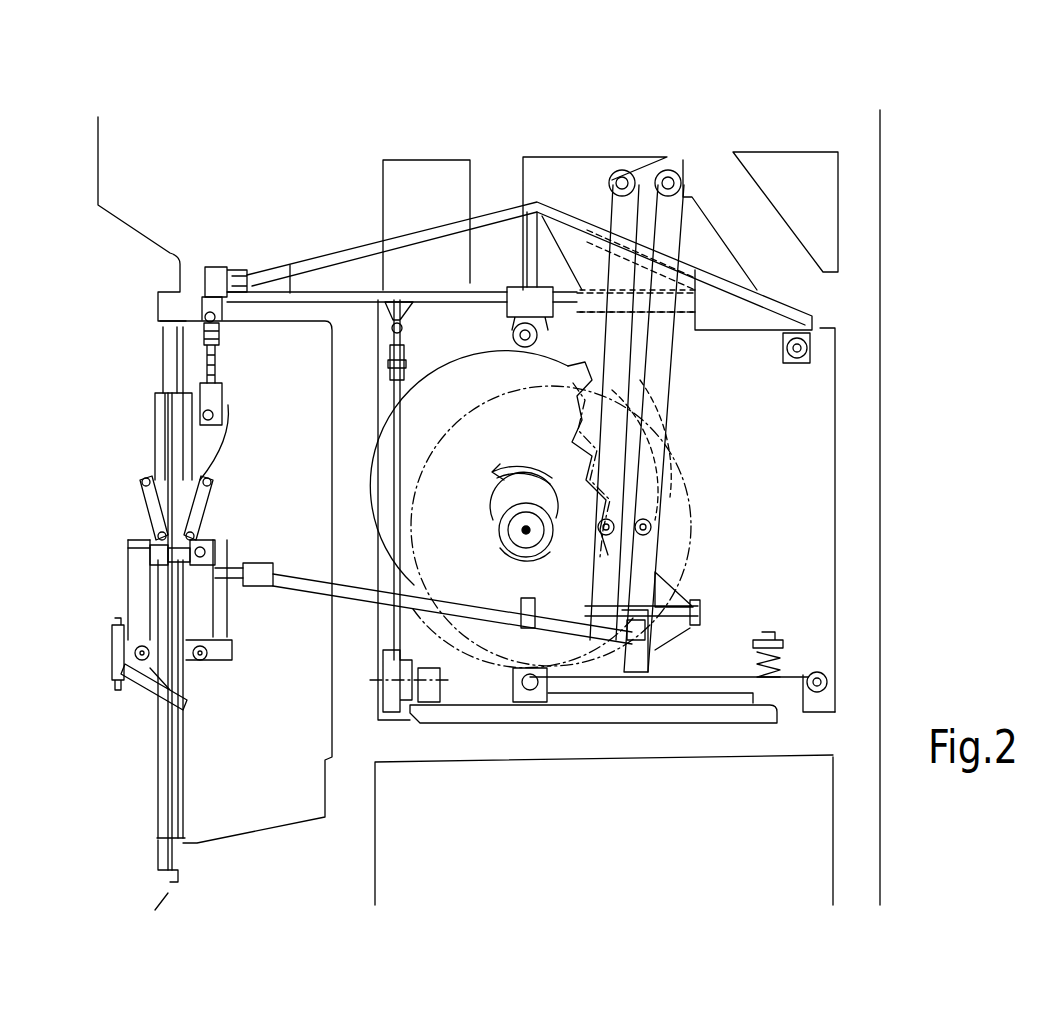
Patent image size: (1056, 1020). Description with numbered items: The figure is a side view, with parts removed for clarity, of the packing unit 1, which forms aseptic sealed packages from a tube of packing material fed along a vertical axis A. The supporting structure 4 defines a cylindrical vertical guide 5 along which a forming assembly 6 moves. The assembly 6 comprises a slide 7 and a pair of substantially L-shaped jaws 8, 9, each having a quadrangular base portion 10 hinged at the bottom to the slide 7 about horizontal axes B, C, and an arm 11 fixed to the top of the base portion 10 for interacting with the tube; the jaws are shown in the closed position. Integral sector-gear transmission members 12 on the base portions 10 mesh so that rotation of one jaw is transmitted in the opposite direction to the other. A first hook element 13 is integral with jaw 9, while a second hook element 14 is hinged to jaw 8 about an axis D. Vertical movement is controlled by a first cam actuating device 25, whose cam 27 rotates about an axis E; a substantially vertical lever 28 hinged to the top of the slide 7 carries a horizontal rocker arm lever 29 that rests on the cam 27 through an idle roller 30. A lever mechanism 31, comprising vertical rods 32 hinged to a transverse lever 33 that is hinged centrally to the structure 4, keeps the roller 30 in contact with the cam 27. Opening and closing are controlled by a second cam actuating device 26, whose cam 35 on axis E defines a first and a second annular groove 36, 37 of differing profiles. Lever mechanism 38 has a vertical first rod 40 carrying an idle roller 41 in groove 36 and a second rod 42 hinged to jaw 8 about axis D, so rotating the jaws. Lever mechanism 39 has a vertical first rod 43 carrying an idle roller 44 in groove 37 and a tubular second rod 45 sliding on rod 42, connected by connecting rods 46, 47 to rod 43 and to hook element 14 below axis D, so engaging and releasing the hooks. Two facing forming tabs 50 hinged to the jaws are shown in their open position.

The packing unit 1 is at (813, 438).
The supporting structure 4 is at (855, 137).
The cylindrical vertical guide 5 is at (162, 365).
The forming assembly 6 is at (104, 656).
The slide 7 is at (165, 438).
The jaw 8 is at (232, 647).
The jaw 9 is at (119, 605).
The base portion 10 is at (140, 588).
The arm 11 is at (217, 528).
The transmission member 12 is at (158, 703).
The first hook element 13 is at (148, 577).
The second hook element 14 is at (200, 520).
The first cam actuating device 25 is at (338, 240).
The second cam actuating device 26 is at (690, 398).
The cam 27 is at (460, 397).
The lever 28 is at (223, 340).
The rocker arm lever 29 is at (393, 245).
The idle roller 30 is at (500, 312).
The lever mechanism 31 is at (392, 620).
The rod 32 is at (410, 620).
The transverse lever 33 is at (393, 705).
The cam 35 is at (507, 647).
The first annular groove 36 is at (662, 450).
The second annular groove 37 is at (662, 478).
The lever mechanism 38 is at (681, 423).
The lever mechanism 39 is at (593, 343).
The first rod 40 is at (657, 346).
The idle roller 41 is at (655, 524).
The second rod 42 is at (562, 630).
The first rod 43 is at (620, 218).
The idle roller 44 is at (623, 543).
The tubular second rod 45 is at (340, 612).
The connecting rod 46 is at (552, 600).
The connecting rod 47 is at (237, 583).
The forming tab 50 is at (212, 498).
The axis A is at (170, 935).
The axis B is at (205, 668).
The axis C is at (140, 687).
The axis D is at (225, 550).
The axis E is at (523, 531).